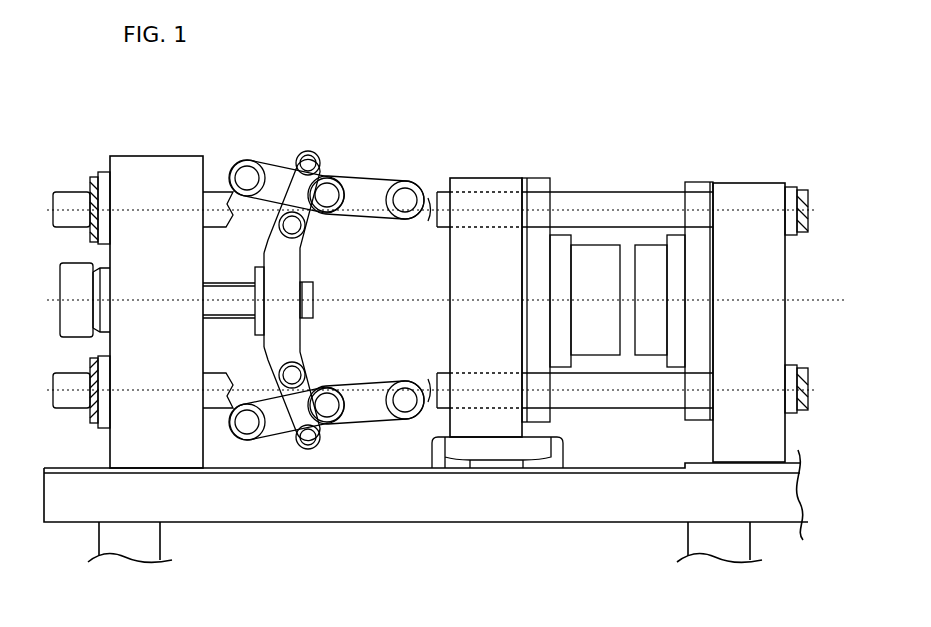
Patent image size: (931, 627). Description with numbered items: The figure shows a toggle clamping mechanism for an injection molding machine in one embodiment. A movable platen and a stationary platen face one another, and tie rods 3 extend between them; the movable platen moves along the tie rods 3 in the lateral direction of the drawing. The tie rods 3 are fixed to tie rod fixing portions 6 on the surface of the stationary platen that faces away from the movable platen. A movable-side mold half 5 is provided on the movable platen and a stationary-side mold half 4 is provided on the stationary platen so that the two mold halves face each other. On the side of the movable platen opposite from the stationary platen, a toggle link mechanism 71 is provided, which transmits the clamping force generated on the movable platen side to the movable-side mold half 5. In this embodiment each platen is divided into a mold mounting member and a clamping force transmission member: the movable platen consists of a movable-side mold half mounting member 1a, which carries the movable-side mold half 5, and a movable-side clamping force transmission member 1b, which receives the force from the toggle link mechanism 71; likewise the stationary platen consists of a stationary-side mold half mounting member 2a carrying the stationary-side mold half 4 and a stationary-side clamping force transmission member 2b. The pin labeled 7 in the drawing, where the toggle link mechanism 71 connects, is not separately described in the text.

The movable-side mold half mounting member 1a is at (550, 178).
The movable-side clamping force transmission member 1b is at (497, 178).
The stationary-side mold half mounting member 2a is at (703, 183).
The stationary-side clamping force transmission member 2b is at (755, 183).
The tie rod 3 is at (617, 192).
The stationary-side mold half 4 is at (645, 245).
The movable-side mold half 5 is at (598, 245).
The tie rod fixing portion 6 is at (795, 367).
The pin 7 is at (400, 382).
The toggle link mechanism 71 is at (353, 177).